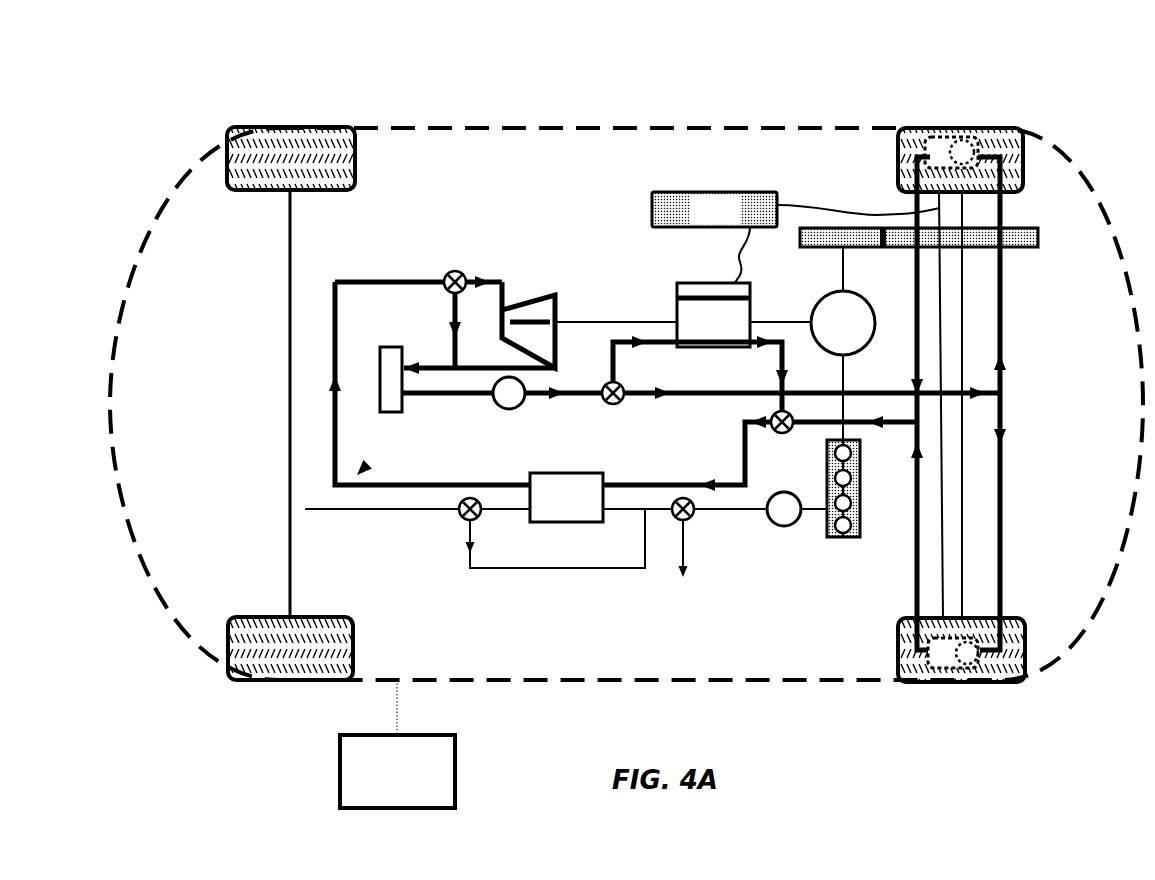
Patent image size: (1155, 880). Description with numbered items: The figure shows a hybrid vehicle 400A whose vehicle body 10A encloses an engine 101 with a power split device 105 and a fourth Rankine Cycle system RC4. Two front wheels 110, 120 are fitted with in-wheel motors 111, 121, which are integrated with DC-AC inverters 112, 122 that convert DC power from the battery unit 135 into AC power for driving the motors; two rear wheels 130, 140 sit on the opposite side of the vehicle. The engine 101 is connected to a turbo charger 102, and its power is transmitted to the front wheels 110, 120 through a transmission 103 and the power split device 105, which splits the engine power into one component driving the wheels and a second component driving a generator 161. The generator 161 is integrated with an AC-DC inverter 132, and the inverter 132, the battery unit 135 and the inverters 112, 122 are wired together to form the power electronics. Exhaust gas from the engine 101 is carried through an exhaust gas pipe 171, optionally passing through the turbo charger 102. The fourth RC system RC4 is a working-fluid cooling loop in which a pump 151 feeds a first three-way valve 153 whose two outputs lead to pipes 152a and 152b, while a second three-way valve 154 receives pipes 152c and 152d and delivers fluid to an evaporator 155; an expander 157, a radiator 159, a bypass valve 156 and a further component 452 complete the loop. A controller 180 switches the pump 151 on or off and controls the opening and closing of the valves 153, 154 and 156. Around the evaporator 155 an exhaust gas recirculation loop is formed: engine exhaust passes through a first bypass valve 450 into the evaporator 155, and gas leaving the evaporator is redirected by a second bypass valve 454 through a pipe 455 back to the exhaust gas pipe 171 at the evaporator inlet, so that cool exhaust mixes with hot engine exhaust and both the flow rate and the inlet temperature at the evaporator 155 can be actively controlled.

The vehicle body 10A is at (556, 118).
The hybrid vehicle 400A is at (1090, 84).
The fourth Rankine Cycle system RC4 is at (523, 234).
The engine 101 is at (847, 540).
The turbo charger 102 is at (784, 527).
The transmission 103 is at (1040, 250).
The power split device 105 is at (843, 343).
The front wheel 110 is at (1010, 128).
The in-wheel motor 111 is at (962, 140).
The DC-AC inverter 112 is at (925, 155).
The front wheel 120 is at (1005, 683).
The in-wheel motor 121 is at (967, 665).
The DC-AC inverter 122 is at (930, 680).
The rear wheel 130 is at (228, 132).
The AC-DC inverter 132 is at (677, 285).
The battery unit 135 is at (796, 209).
The rear wheel 140 is at (228, 628).
The pump 151 is at (500, 406).
The pipe 152a is at (620, 375).
The pipe 152b is at (683, 400).
The pipe 152c is at (775, 382).
The pipe 152d is at (818, 430).
The first three-way valve 153 is at (608, 406).
The second three-way valve 154 is at (775, 436).
The evaporator 155 is at (566, 497).
The bypass valve 156 is at (455, 270).
The expander 157 is at (556, 290).
The radiator 159 is at (395, 345).
The generator 161 is at (713, 315).
The exhaust gas pipe 171 is at (356, 510).
The controller 180 is at (397, 744).
The first bypass valve 450 is at (672, 522).
The condenser 452 is at (397, 413).
The second bypass valve 454 is at (462, 518).
The pipe 455 is at (505, 570).